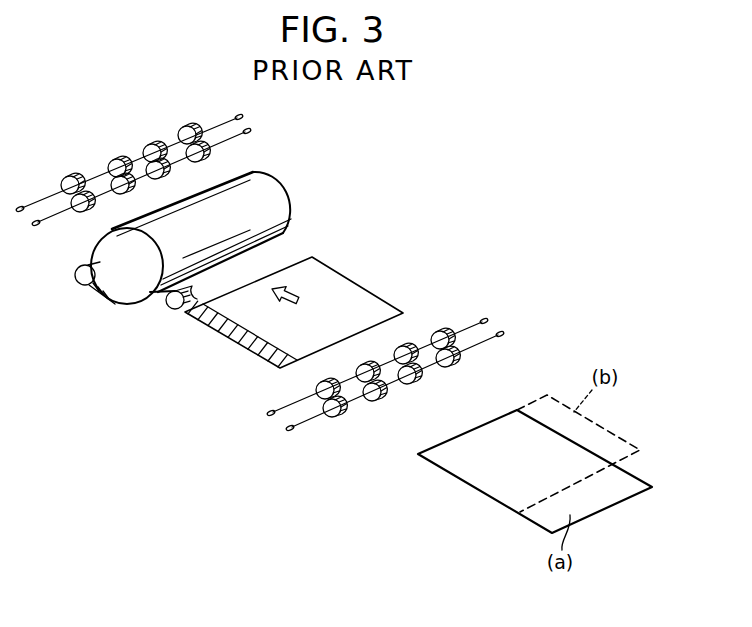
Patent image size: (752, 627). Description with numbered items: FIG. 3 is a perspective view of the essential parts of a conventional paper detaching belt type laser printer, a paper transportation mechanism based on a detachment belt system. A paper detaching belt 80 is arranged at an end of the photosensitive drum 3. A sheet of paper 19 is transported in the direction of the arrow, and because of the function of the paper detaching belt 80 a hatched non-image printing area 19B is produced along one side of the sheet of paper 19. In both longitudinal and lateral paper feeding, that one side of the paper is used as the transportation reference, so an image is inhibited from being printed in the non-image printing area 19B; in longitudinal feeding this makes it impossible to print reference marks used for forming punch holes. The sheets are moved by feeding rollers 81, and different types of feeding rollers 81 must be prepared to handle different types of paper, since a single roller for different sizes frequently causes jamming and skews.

The photosensitive drum 3 is at (270, 184).
The sheet of paper 19 is at (288, 312).
The non-image printing area 19B is at (227, 337).
The paper detaching belt 80 is at (153, 306).
The feeding rollers 81 is at (118, 153).